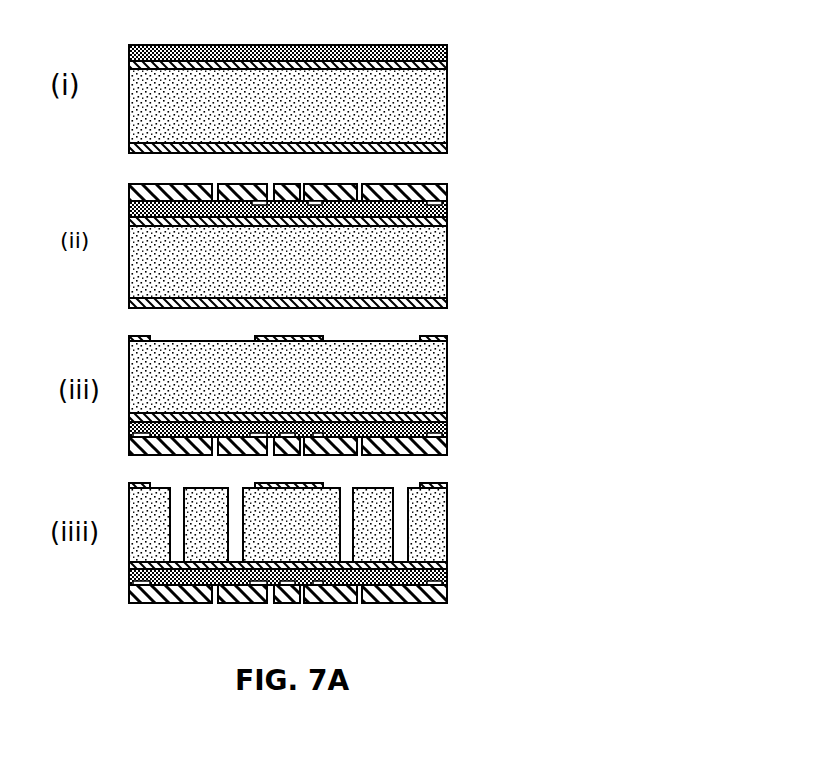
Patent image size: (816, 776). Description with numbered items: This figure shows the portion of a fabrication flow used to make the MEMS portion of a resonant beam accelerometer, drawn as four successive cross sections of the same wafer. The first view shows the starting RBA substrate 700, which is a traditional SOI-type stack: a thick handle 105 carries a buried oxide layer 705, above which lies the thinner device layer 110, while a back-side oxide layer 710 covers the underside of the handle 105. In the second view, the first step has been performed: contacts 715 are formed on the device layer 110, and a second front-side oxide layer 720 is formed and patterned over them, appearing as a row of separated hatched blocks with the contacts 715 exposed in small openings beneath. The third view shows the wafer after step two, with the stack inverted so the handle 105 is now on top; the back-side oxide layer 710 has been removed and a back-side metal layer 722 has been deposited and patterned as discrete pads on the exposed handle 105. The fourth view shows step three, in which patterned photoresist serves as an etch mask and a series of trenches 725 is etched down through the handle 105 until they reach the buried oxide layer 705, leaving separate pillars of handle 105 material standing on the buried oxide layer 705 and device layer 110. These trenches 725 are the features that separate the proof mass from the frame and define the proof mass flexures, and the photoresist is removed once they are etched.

The starting RBA substrate 700 is at (402, 97).
The device layer 110 is at (447, 52).
The buried oxide layer 705 is at (447, 65).
The handle 105 is at (447, 103).
The back-side oxide layer 710 is at (333, 159).
The second front-side oxide layer 720 is at (447, 190).
The contacts 715 is at (258, 205).
The back-side metal layer 722 is at (298, 343).
The trenches 725 is at (178, 492).